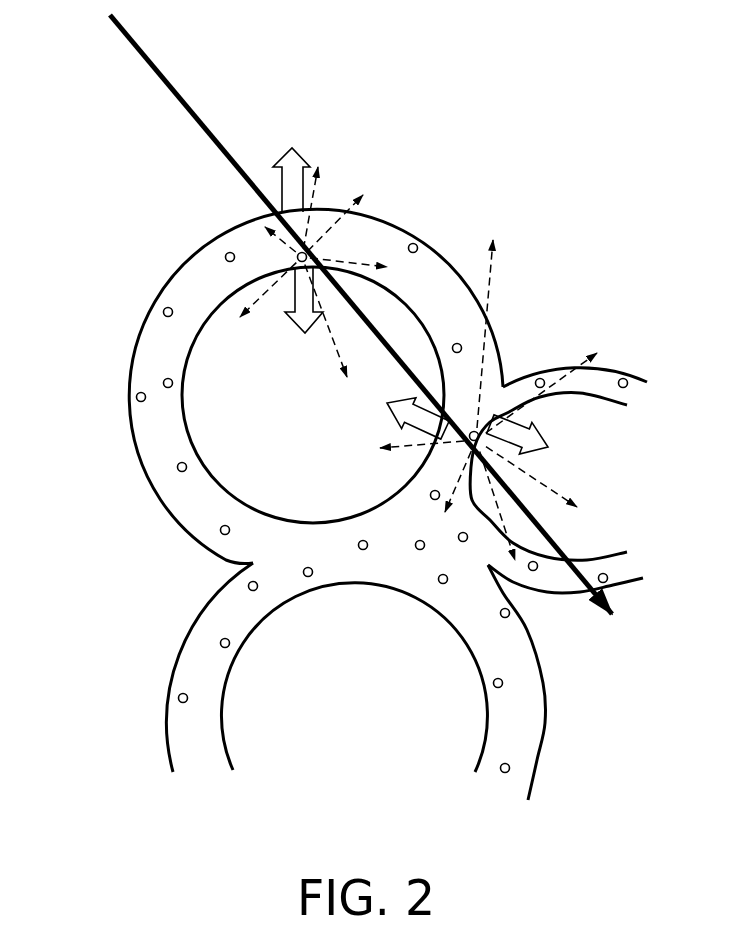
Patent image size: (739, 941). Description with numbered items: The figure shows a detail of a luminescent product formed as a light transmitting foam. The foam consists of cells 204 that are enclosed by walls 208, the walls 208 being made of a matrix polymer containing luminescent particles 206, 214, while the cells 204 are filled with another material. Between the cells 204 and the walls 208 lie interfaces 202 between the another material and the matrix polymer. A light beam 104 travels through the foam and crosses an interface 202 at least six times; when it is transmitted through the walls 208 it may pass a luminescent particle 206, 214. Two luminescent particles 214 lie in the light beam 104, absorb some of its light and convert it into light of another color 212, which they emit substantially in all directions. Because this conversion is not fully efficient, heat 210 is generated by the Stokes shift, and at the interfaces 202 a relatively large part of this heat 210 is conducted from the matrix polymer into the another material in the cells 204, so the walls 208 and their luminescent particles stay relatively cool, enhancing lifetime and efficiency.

The light beam 104 is at (188, 113).
The interface 202 is at (240, 290).
The cell 204 is at (210, 368).
The luminescent particle 206 is at (178, 466).
The wall 208 is at (200, 508).
The heat 210 is at (292, 148).
The light of another color 212 is at (478, 286).
The luminescent particle 214 is at (297, 256).